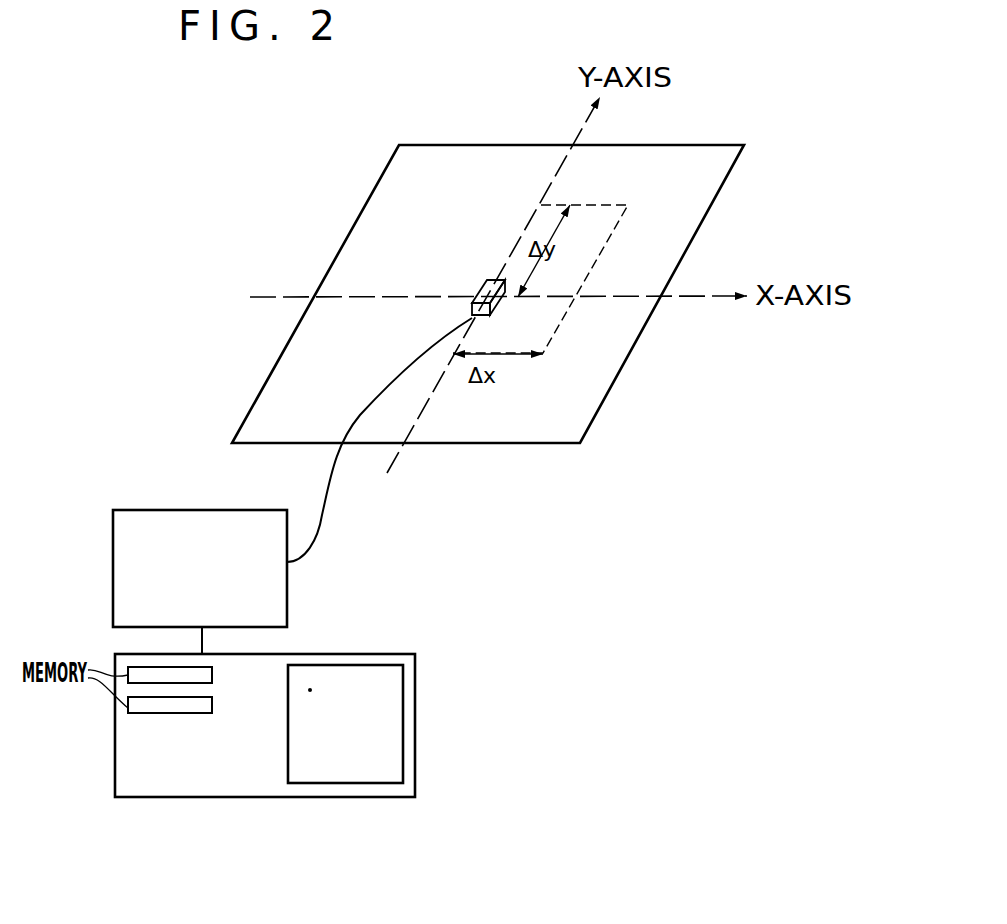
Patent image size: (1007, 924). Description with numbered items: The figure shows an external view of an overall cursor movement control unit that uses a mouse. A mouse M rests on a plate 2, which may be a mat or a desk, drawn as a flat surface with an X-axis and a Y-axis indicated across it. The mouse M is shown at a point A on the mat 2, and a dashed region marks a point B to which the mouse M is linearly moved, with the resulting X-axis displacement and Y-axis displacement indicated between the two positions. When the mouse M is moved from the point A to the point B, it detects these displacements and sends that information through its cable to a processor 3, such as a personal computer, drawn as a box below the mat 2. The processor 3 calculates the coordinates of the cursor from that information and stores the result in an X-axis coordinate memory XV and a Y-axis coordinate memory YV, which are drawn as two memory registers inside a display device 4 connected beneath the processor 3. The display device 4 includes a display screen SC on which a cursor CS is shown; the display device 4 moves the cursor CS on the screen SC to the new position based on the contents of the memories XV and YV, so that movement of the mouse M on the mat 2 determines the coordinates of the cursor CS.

The plate 2 is at (600, 403).
The processor 3 is at (155, 508).
The display device 4 is at (383, 652).
The point A is at (488, 298).
The point B is at (558, 270).
The mouse M is at (472, 312).
The X-axis coordinate memory XV is at (212, 675).
The Y-axis coordinate memory YV is at (212, 708).
The display screen SC is at (403, 747).
The cursor CS is at (310, 690).